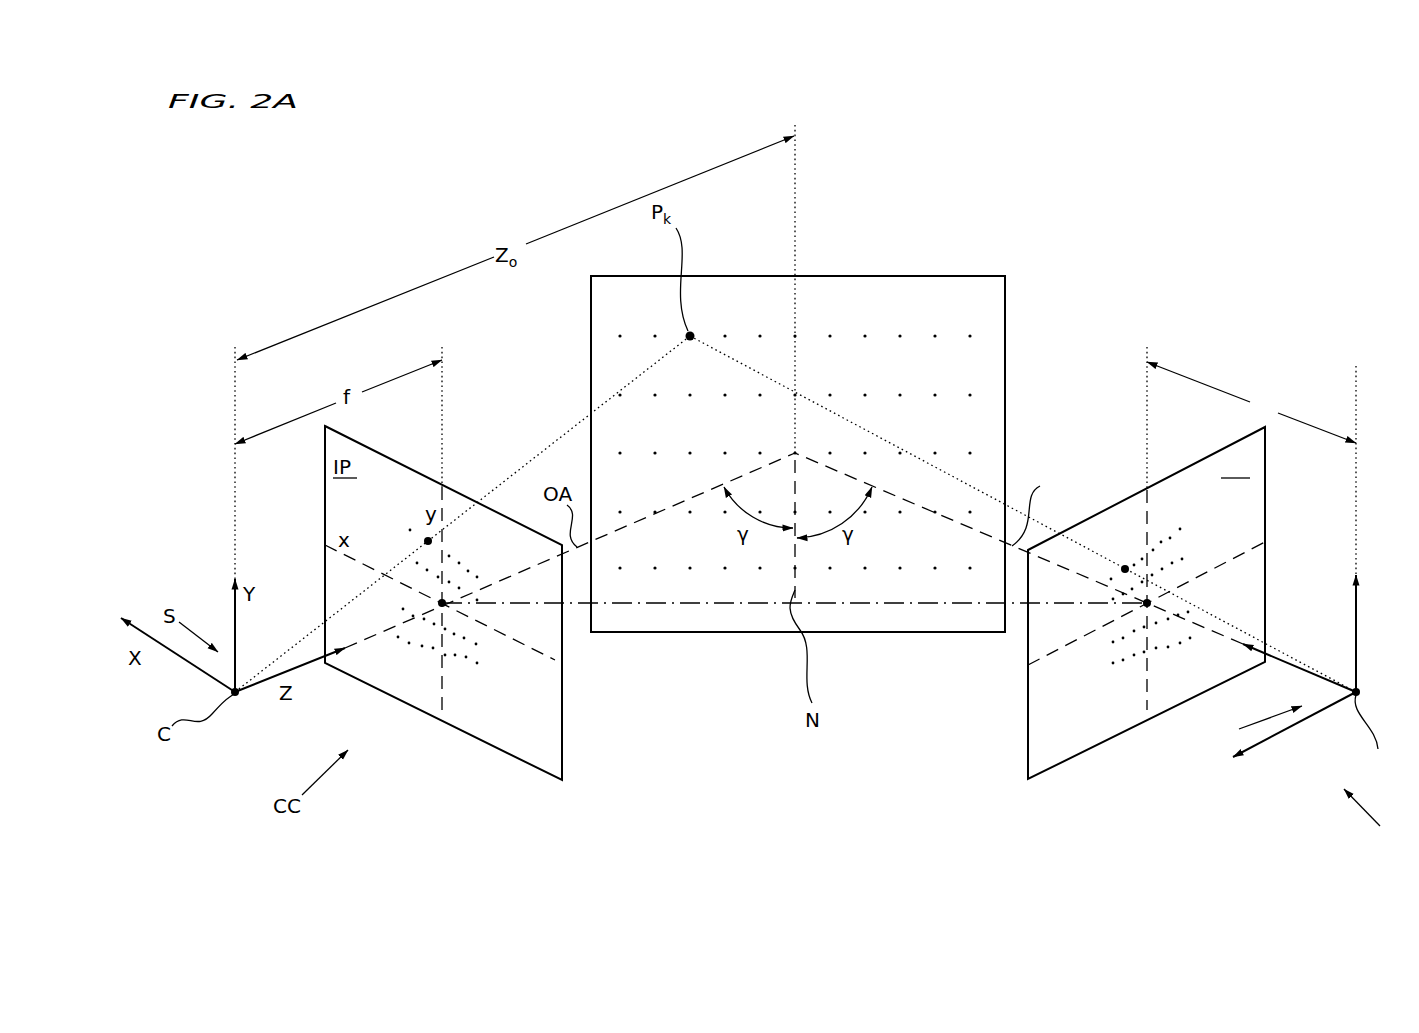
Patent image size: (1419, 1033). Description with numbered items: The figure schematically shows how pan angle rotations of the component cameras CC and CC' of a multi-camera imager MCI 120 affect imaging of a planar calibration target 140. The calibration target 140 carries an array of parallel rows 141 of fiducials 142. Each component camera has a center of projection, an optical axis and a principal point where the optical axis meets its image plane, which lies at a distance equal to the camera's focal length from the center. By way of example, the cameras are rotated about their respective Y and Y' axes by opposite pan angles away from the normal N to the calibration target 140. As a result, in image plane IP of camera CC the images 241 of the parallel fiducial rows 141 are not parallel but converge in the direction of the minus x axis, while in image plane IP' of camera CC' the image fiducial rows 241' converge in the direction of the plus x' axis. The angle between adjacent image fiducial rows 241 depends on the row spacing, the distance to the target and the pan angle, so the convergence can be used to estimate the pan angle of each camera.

The MCI 120 is at (1254, 327).
The planar calibration target 140 is at (965, 275).
The parallel rows of fiducials 141 is at (975, 452).
The fiducials 142 is at (935, 336).
The images of parallel fiducial rows 241 is at (528, 629).
The image fiducial rows 241' is at (1064, 629).